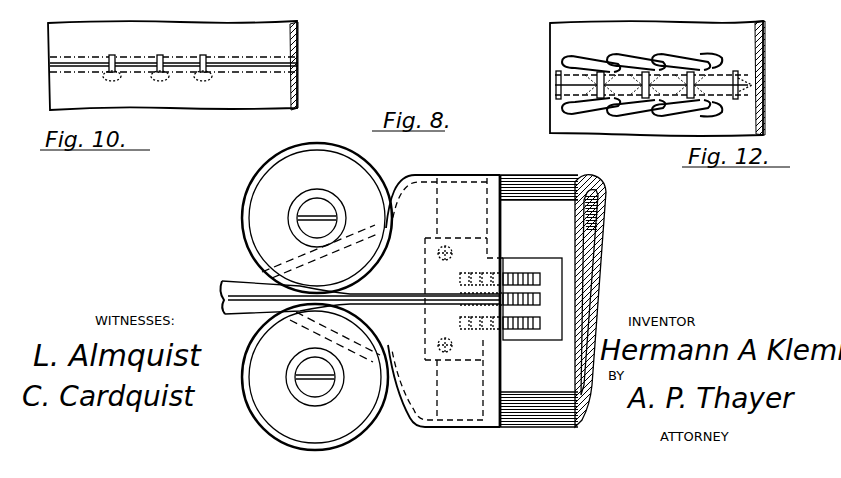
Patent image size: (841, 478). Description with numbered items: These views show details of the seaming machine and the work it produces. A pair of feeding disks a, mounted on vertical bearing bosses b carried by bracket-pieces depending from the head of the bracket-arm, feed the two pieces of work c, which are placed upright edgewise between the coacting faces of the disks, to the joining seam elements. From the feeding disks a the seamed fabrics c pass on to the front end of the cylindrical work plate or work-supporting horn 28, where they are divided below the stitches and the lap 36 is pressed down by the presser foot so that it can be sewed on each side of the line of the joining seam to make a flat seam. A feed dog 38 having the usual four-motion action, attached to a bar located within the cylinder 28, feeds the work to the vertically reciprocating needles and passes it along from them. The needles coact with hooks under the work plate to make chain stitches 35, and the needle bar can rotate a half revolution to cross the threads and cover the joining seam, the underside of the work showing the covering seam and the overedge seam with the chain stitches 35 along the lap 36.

In FIG. 8, the feeding disks a is at (243, 205).
In FIG. 8, the vertical bearing bosses b is at (317, 198).
In FIG. 10, the pieces of work c is at (297, 30).
In FIG. 12, the pieces of work c is at (556, 33).
In FIG. 8, the pieces of work c is at (478, 175).
In FIG. 8, the cylindrical work plate or work-supporting horn 28 is at (607, 186).
In FIG. 12, the chain stitches 35 is at (575, 60).
In FIG. 10, the lap 36 is at (300, 64).
In FIG. 12, the lap 36 is at (556, 85).
In FIG. 8, the lap 36 is at (470, 297).
In FIG. 8, the feed dog 38 is at (520, 283).